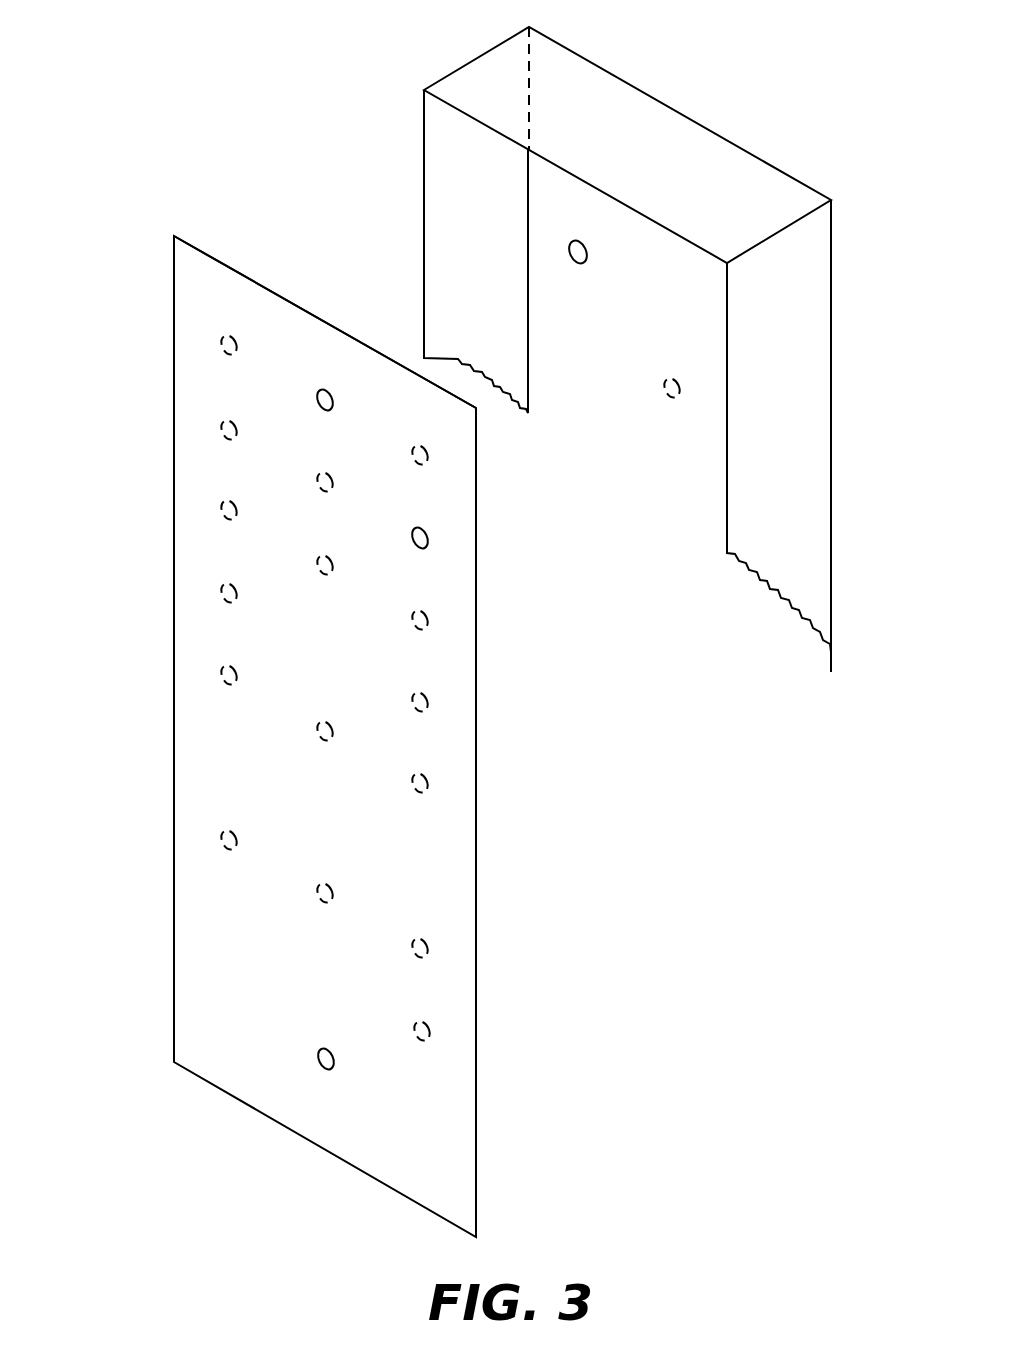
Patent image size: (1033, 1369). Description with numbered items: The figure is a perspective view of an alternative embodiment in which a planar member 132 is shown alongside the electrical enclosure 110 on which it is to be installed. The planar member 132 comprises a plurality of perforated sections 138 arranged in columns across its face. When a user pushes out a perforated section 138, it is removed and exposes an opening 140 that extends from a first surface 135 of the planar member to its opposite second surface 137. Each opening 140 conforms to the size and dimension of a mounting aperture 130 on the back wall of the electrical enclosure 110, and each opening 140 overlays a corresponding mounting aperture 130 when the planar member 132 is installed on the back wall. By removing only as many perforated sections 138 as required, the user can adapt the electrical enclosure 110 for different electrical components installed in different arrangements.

The electrical enclosure 110 is at (634, 345).
The mounting aperture 130 is at (585, 263).
The planar member 132 is at (477, 786).
The first surface 135 is at (202, 618).
The second surface 137 is at (215, 295).
The perforated section 138 is at (678, 400).
The opening 140 is at (320, 392).